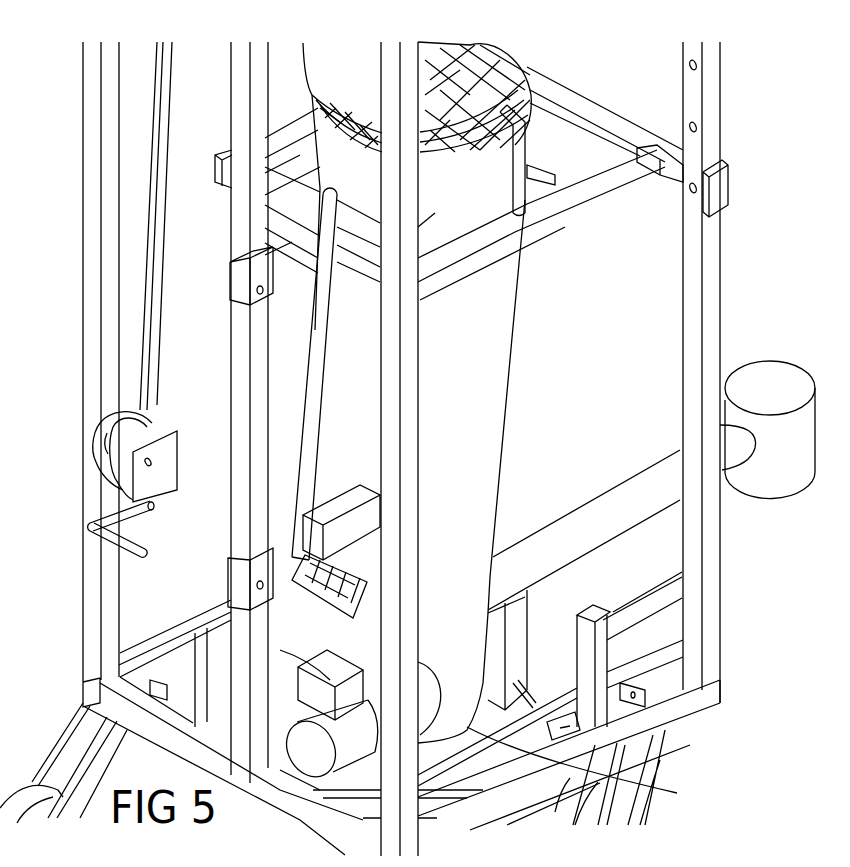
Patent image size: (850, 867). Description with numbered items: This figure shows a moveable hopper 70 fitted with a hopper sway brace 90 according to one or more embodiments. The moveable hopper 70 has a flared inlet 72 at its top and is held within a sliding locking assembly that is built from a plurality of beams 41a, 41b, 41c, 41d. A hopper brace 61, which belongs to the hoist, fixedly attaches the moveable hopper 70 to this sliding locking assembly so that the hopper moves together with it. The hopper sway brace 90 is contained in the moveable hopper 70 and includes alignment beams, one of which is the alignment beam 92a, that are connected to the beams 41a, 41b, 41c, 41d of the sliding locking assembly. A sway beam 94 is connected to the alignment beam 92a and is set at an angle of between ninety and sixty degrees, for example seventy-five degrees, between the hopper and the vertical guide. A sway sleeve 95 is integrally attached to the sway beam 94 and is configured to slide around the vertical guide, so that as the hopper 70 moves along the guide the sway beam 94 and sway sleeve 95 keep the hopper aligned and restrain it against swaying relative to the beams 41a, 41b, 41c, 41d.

The beam 41a is at (495, 265).
The beam 41b is at (292, 195).
The beam 41c is at (302, 123).
The beam 41d is at (573, 110).
The hopper brace 61 is at (551, 168).
The moveable hopper 70 is at (500, 468).
The flared inlet 72 is at (528, 70).
The hopper sway brace 90 is at (280, 538).
The alignment beam 92a is at (293, 258).
The sway beam 94 is at (317, 380).
The sway sleeve 95 is at (240, 585).